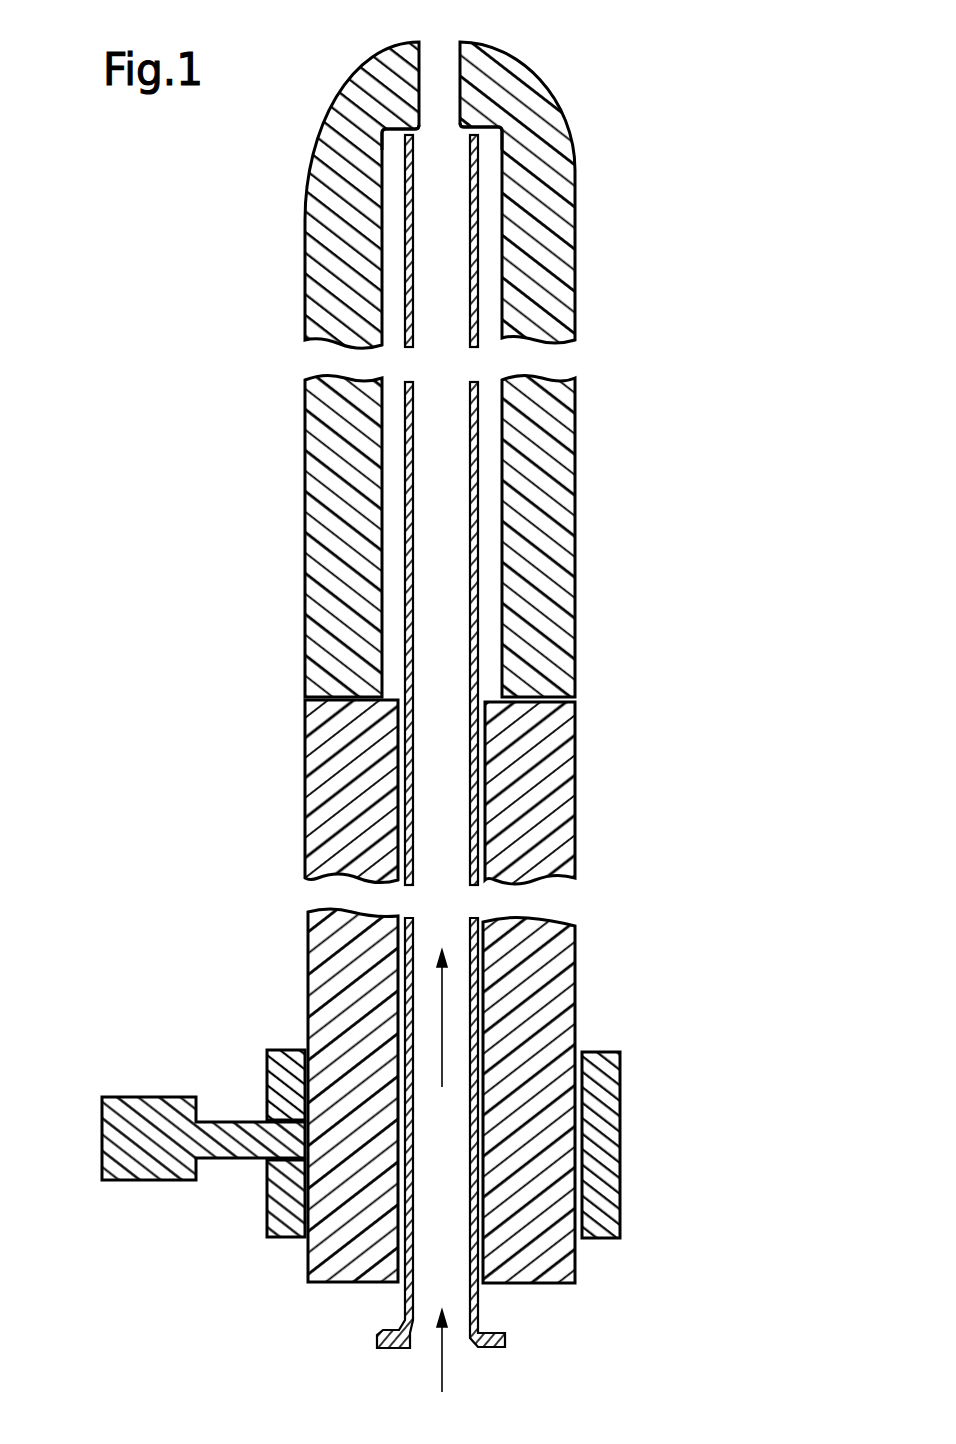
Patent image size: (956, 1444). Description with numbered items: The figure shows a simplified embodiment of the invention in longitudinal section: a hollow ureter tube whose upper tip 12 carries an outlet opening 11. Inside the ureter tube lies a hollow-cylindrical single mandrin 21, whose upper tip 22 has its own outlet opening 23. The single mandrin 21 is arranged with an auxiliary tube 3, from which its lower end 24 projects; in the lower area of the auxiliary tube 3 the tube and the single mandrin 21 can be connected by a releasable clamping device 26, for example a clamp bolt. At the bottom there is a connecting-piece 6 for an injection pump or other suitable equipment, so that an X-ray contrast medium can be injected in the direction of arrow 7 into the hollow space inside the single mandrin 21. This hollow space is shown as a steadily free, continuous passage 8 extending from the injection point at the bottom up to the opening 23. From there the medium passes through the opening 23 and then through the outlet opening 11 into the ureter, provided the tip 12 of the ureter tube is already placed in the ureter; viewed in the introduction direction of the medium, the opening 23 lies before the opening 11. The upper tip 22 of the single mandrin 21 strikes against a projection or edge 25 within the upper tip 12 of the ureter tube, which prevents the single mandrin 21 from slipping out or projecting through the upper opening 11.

The auxiliary tube 3 is at (575, 717).
The connecting-piece 6 is at (375, 1339).
The arrow 7 is at (442, 1370).
The gap between housing walls 8 is at (452, 771).
The outlet opening 11 is at (435, 47).
The tip of the ureter tube 12 is at (462, 44).
The hollow-cylindrical single mandrin 21 is at (480, 243).
The tip of the single mandrin 22 is at (473, 139).
The outlet opening of the single mandrin 23 is at (428, 139).
The lower end of the single mandrin 24 is at (405, 1300).
The projection or edge 25 is at (360, 88).
The releasable clamping device 26 is at (268, 1076).